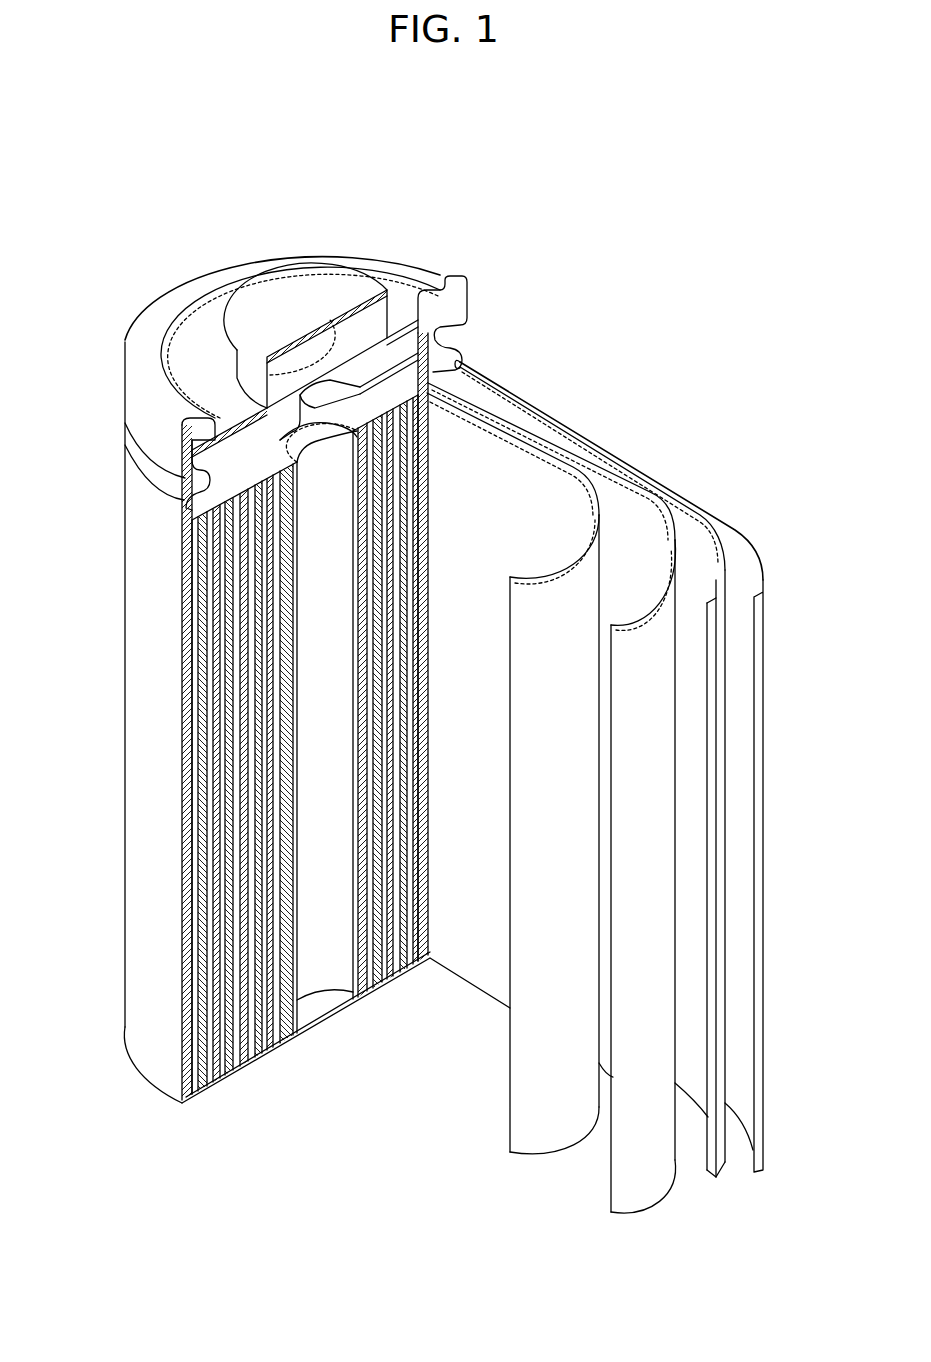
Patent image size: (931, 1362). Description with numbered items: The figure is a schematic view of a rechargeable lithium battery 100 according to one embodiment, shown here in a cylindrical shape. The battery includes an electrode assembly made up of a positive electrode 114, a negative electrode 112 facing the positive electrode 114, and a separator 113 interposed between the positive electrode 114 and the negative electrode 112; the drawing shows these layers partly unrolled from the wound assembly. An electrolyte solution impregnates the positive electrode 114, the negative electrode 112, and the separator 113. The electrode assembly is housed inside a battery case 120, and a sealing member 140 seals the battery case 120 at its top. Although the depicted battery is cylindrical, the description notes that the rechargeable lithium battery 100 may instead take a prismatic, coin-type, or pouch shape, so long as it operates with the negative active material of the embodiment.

The rechargeable lithium battery 100 is at (533, 222).
The negative electrode 112 is at (752, 562).
The separator 113 is at (557, 465).
The positive electrode 114 is at (620, 503).
The battery case 120 is at (145, 683).
The sealing member 140 is at (276, 300).